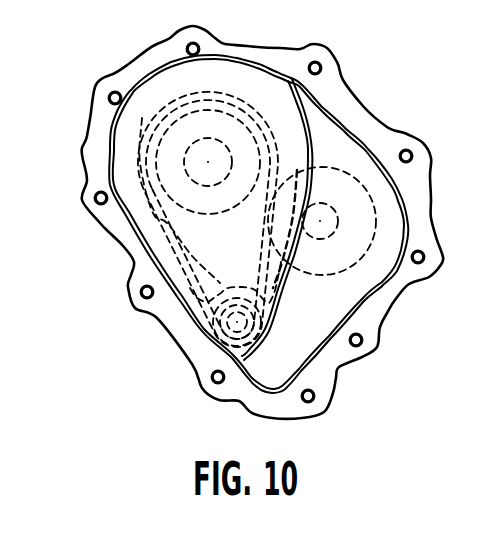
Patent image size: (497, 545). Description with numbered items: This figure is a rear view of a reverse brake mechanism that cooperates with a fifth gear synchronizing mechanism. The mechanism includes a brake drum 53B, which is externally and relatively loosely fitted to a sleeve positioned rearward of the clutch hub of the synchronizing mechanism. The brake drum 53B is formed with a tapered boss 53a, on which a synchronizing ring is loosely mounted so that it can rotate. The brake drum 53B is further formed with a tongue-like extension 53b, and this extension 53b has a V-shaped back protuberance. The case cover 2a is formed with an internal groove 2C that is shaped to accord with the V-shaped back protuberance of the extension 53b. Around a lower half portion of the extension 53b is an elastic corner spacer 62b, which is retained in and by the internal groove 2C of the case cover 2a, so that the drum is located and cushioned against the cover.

The case cover 2a is at (374, 121).
The internal groove 2C is at (135, 237).
The tapered boss 53a is at (145, 145).
The brake drum 53B is at (83, 189).
The tongue-like extension 53b is at (121, 282).
The elastic corner spacer 62b is at (210, 312).